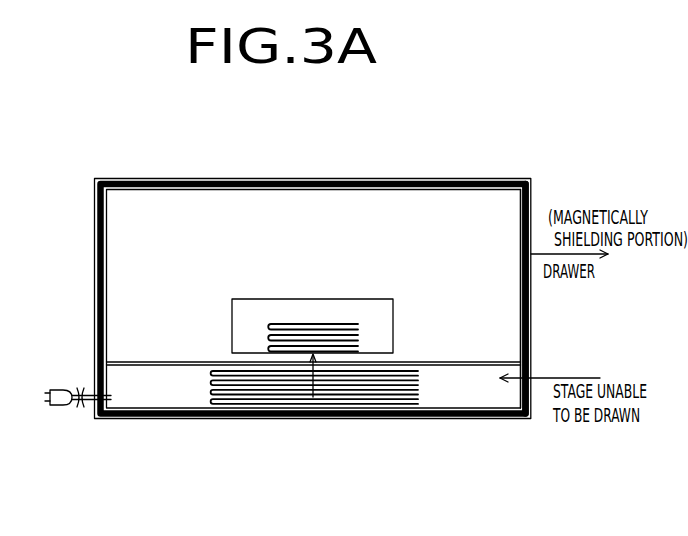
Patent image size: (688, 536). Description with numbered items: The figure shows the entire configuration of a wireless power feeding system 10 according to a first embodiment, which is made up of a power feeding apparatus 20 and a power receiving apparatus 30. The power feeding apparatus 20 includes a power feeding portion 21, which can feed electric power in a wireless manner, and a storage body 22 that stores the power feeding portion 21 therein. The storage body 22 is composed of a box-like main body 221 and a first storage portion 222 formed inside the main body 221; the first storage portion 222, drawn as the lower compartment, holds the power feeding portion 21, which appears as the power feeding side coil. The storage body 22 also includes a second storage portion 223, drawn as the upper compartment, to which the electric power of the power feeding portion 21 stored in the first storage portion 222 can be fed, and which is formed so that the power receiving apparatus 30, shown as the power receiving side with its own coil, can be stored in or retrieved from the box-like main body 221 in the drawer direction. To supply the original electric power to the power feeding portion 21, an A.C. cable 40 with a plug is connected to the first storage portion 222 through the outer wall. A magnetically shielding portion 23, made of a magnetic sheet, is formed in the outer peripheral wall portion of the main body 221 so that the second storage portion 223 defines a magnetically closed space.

The wireless power feeding system 10 is at (402, 155).
The power feeding apparatus 20 is at (362, 417).
The power feeding portion 21 is at (221, 403).
The storage body 22 is at (237, 178).
The box-like main body 221 is at (157, 178).
The first storage portion 222 is at (150, 393).
The second storage portion 223 is at (523, 209).
The magnetically shielding portion 23 is at (531, 210).
The power receiving apparatus 30 is at (417, 328).
The A.C. cable 40 is at (75, 392).